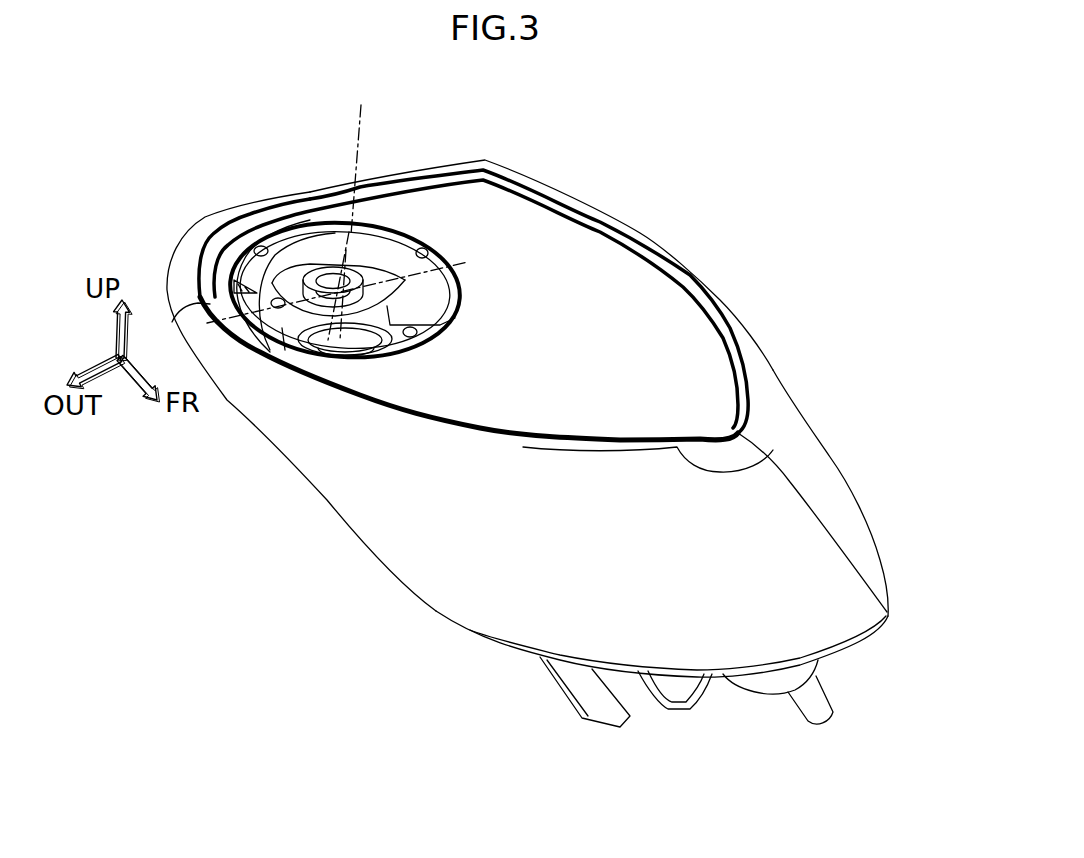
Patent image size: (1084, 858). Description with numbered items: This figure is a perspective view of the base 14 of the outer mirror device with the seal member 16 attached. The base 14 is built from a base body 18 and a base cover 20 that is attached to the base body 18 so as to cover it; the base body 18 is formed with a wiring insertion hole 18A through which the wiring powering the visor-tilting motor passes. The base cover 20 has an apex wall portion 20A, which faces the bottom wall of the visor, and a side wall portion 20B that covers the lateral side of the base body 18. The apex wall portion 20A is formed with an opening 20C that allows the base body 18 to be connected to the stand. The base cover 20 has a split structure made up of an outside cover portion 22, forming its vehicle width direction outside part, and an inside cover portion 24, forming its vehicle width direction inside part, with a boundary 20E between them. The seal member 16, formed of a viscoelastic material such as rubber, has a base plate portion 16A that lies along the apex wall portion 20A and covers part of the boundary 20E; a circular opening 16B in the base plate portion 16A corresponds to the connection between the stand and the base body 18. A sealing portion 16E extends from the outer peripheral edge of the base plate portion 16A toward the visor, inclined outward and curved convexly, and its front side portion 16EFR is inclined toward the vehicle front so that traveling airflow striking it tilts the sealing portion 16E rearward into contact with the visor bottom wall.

The base 14 is at (558, 404).
The seal member 16 is at (580, 276).
The base plate portion 16A is at (557, 233).
The circular opening 16B is at (433, 247).
The sealing portion 16E is at (607, 230).
The front side portion of the sealing portion 16EFR is at (773, 455).
The base body 18 is at (822, 665).
The wiring insertion hole 18A is at (332, 295).
The base cover 20 is at (557, 417).
The apex wall portion 20A is at (672, 330).
The side wall portion 20B is at (357, 488).
The opening 20C is at (212, 222).
The boundary 20E is at (749, 437).
The outside cover portion 22 is at (483, 593).
The inside cover portion 24 is at (853, 497).